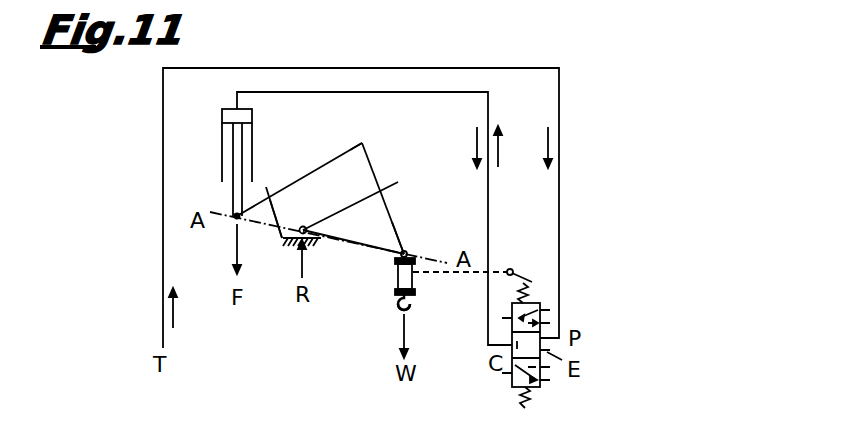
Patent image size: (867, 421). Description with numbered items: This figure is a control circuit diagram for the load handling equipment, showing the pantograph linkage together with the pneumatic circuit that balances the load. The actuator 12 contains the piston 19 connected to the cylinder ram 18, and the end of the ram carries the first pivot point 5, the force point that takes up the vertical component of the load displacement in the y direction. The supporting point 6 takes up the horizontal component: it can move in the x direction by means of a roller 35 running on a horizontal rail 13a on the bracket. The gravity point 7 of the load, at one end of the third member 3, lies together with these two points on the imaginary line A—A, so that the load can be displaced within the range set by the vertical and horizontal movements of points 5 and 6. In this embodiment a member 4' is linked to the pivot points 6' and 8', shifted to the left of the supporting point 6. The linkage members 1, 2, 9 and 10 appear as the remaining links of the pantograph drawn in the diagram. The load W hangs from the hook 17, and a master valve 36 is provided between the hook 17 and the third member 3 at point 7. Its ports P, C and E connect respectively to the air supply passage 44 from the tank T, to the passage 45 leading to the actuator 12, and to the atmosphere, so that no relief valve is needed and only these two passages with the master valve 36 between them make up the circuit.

The beam 1 is at (313, 167).
The lever arm 2 is at (378, 202).
The third member 3 is at (400, 239).
The member 4' is at (265, 231).
The first pivot point 5 is at (235, 214).
The supporting point 6 is at (313, 259).
The pivot point 6' is at (280, 270).
The gravity point 7 is at (407, 255).
The pivot point 8' is at (271, 201).
The beam end joint 9 is at (362, 143).
The link 10 is at (362, 197).
The actuator 12 is at (253, 113).
The horizontal rail 13a is at (322, 235).
The hook 17 is at (398, 312).
The cylinder ram 18 is at (233, 150).
The piston 19 is at (223, 119).
The roller 35 is at (304, 226).
The master valve 36 is at (393, 283).
The air supply passage 44 is at (560, 115).
The passage 45 is at (490, 210).